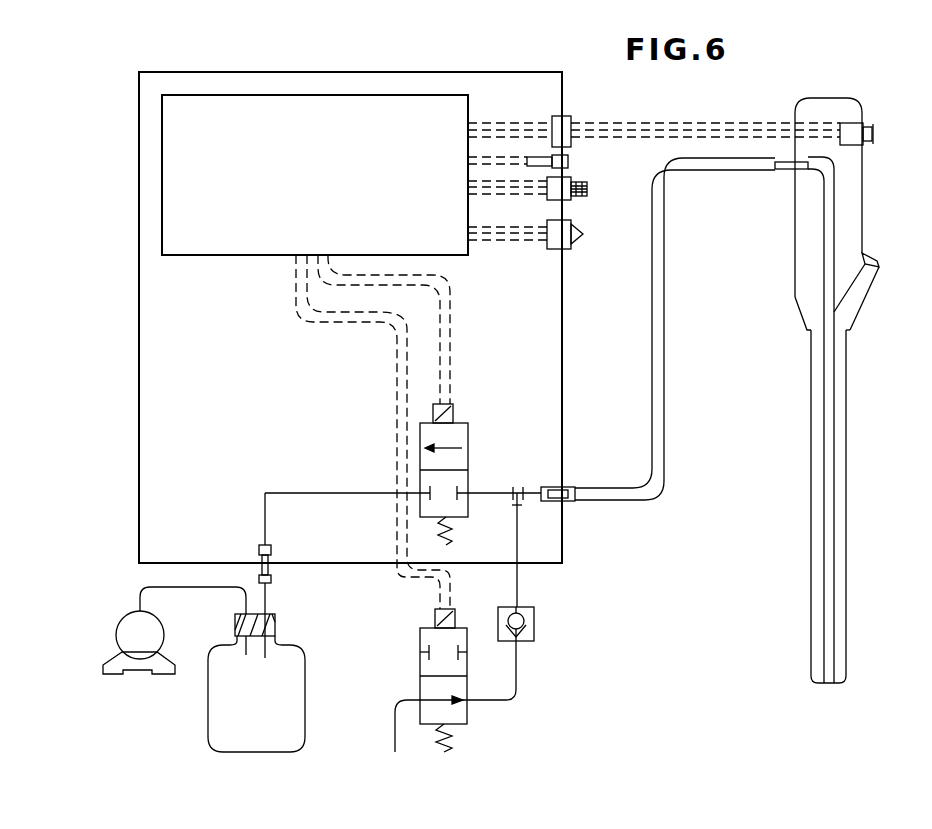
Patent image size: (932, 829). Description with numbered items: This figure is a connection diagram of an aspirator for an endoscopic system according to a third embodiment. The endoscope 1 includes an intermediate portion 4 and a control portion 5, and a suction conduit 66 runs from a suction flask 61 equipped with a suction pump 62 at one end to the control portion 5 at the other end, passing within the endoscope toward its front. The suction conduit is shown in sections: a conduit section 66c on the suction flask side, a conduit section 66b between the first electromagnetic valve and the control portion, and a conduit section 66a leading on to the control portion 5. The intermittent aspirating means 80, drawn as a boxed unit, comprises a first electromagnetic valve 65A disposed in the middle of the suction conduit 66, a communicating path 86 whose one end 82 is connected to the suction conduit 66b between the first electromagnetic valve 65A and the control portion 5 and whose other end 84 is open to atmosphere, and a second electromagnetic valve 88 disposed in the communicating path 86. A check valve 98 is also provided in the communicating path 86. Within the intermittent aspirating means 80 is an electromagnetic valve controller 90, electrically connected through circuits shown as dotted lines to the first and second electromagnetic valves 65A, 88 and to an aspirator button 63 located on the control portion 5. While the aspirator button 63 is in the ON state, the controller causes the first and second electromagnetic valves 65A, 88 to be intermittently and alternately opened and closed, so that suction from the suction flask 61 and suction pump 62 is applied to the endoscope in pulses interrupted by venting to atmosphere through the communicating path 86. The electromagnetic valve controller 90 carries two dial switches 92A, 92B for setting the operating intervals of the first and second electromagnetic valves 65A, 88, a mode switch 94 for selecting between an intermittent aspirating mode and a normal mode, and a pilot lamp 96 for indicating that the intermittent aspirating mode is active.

The endoscope 1 is at (828, 390).
The intermediate portion 4 is at (847, 632).
The control portion 5 is at (852, 230).
The suction flask 61 is at (292, 700).
The suction pump 62 is at (120, 632).
The aspirator button 63 is at (874, 134).
The first electromagnetic valve 65A is at (462, 463).
The suction conduit 66 is at (818, 254).
The suction conduit 66a is at (658, 431).
The suction conduit 66b is at (505, 493).
The suction conduit 66c is at (341, 496).
The intermittent aspirating means 80 is at (547, 84).
The one end of communicating path 82 is at (518, 538).
The other end of communicating path 84 is at (393, 733).
The communicating path 86 is at (518, 675).
The second electromagnetic valve 88 is at (420, 662).
The electromagnetic valve controller 90 is at (324, 189).
The dial switch 92A is at (588, 188).
The dial switch 92B is at (612, 202).
The mode switch 94 is at (583, 236).
The pilot lamp 96 is at (568, 160).
The check valve 98 is at (534, 623).